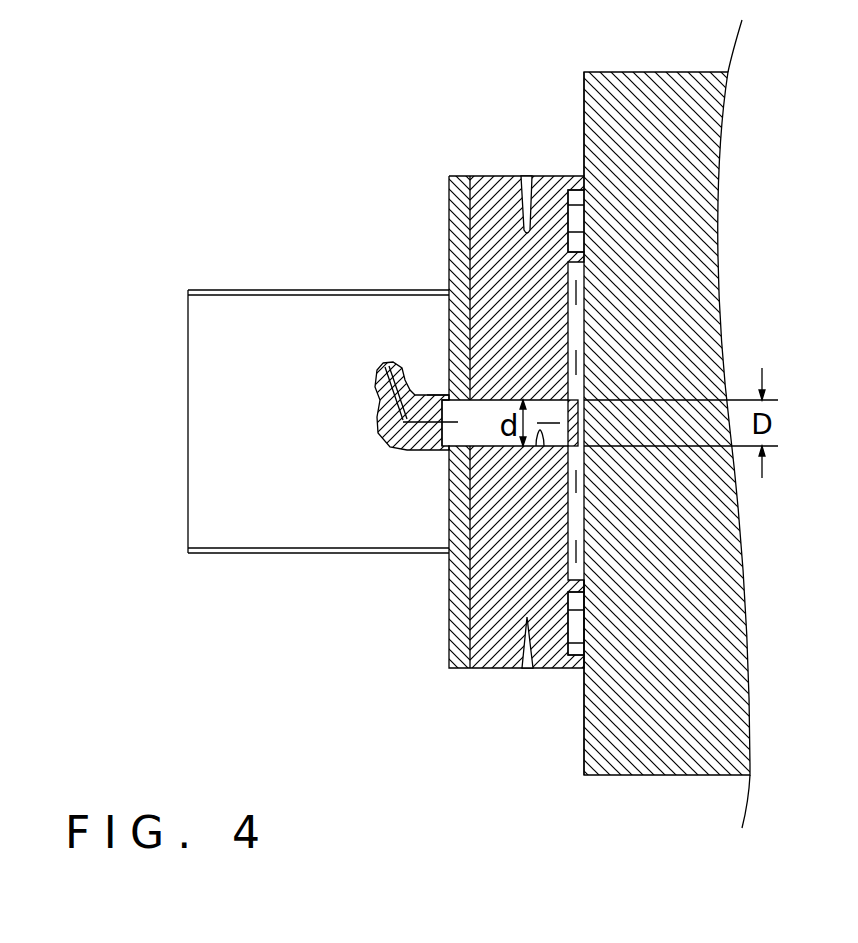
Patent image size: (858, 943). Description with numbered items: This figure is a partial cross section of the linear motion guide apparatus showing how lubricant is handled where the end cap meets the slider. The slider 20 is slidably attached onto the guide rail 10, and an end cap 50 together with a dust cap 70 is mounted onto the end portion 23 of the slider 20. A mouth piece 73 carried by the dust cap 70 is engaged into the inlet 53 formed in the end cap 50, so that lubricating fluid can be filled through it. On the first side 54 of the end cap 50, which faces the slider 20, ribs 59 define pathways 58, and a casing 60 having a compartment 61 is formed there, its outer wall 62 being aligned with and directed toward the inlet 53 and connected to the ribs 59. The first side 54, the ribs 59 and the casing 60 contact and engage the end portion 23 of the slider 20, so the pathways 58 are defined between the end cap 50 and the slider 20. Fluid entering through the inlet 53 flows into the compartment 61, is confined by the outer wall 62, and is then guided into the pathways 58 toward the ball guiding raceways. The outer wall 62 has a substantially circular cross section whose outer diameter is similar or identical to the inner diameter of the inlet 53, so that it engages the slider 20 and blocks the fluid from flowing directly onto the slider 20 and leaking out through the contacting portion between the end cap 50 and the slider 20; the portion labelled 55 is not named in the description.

The guide rail 10 is at (291, 552).
The slider 20 is at (710, 116).
The end portion 23 is at (594, 114).
The end cap 50 is at (488, 203).
The inlet 53 is at (538, 446).
The first side 54 is at (586, 182).
The lower block portion 55 is at (472, 600).
The pathway 58 is at (572, 537).
The rib 59 is at (578, 592).
The casing 60 is at (568, 416).
The compartment 61 is at (540, 400).
The outer wall 62 is at (690, 398).
The dust cap 70 is at (462, 182).
The mouth piece 73 is at (388, 363).